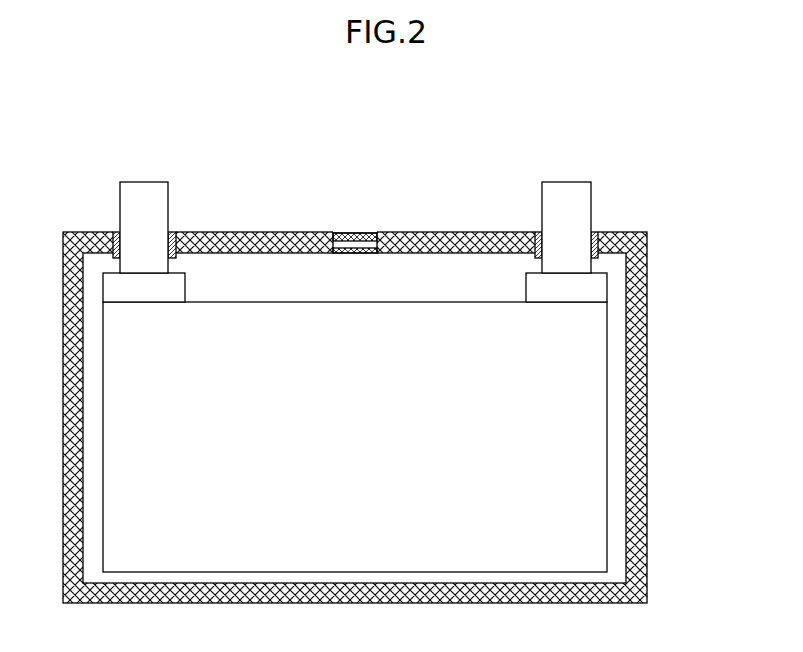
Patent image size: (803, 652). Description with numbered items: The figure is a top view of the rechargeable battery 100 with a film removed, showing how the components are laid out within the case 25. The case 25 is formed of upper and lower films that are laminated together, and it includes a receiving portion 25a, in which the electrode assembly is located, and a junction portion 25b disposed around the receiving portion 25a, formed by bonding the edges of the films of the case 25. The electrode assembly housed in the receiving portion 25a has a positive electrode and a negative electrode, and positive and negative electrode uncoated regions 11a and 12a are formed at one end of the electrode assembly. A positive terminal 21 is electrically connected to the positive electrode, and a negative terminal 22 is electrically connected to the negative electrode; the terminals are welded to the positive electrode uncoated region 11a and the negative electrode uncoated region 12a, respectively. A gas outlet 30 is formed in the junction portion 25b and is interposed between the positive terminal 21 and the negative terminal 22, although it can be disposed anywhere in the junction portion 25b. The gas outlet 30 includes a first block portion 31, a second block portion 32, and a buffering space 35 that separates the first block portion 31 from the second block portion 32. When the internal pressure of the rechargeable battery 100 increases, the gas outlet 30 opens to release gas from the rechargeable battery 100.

The rechargeable battery 100 is at (403, 90).
The positive electrode uncoated region 11a is at (110, 290).
The negative electrode uncoated region 12a is at (598, 285).
The positive terminal 21 is at (144, 188).
The negative terminal 22 is at (570, 190).
The case 25 is at (400, 417).
The receiving portion 25a is at (617, 427).
The junction portion 25b is at (645, 366).
The gas outlet 30 is at (313, 232).
The first block portion 31 is at (342, 246).
The second block portion 32 is at (373, 240).
The buffering space 35 is at (361, 243).